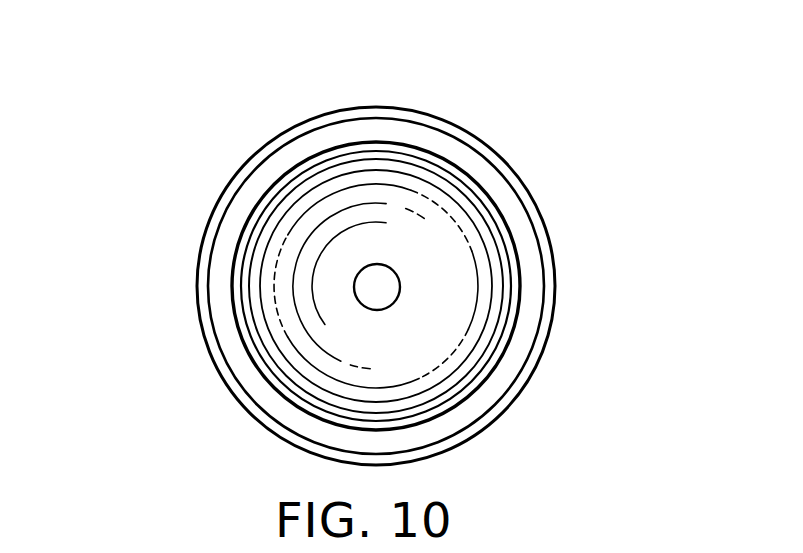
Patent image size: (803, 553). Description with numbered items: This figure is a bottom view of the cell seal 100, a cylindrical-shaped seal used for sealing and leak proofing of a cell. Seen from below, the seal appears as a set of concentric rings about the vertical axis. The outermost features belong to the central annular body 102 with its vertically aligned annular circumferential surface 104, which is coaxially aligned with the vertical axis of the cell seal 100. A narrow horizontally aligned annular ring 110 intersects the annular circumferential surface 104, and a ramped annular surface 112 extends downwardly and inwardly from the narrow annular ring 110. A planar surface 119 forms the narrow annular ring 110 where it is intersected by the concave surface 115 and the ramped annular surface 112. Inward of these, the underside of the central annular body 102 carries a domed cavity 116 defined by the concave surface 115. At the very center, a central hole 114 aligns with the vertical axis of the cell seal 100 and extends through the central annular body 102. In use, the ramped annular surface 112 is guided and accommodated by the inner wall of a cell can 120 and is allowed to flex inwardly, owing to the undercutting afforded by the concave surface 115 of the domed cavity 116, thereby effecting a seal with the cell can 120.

The cell seal 100 is at (192, 257).
The central annular body 102 is at (533, 200).
The annular circumferential surface 104 is at (552, 248).
The narrow annular ring 110 is at (555, 297).
The ramped annular surface 112 is at (535, 348).
The cell can 120 is at (508, 377).
The planar surface 119 is at (475, 413).
The concave surface 115 is at (452, 190).
The domed cavity 116 is at (402, 160).
The central hole 114 is at (383, 279).